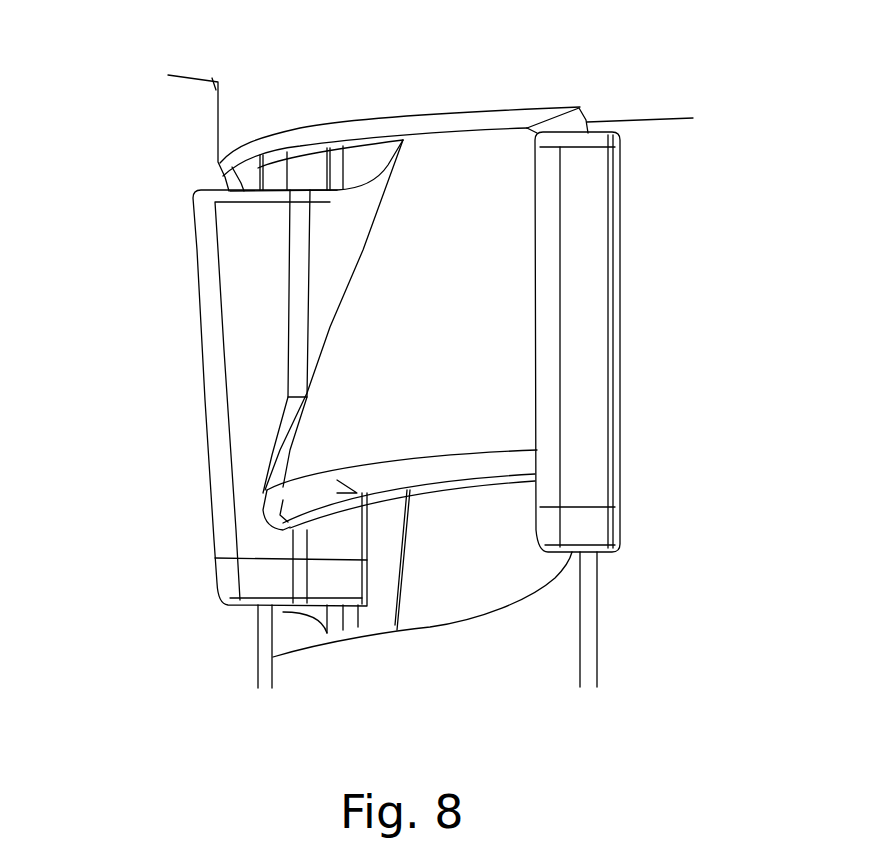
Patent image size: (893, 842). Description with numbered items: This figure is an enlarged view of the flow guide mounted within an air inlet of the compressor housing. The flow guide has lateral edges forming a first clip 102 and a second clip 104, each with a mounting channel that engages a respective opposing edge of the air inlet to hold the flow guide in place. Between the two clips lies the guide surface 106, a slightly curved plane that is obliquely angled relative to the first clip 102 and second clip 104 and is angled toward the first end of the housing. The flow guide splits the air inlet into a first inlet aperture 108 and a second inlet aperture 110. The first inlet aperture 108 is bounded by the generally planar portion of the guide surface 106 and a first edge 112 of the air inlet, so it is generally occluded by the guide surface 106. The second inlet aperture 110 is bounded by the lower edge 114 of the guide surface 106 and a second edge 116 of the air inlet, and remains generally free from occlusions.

The first clip 102 is at (202, 412).
The second clip 104 is at (623, 387).
The guide surface 106 is at (483, 327).
The first inlet aperture 108 is at (358, 168).
The second inlet aperture 110 is at (433, 603).
The first edge 112 is at (460, 128).
The lower edge 114 is at (507, 478).
The second edge 116 is at (510, 620).